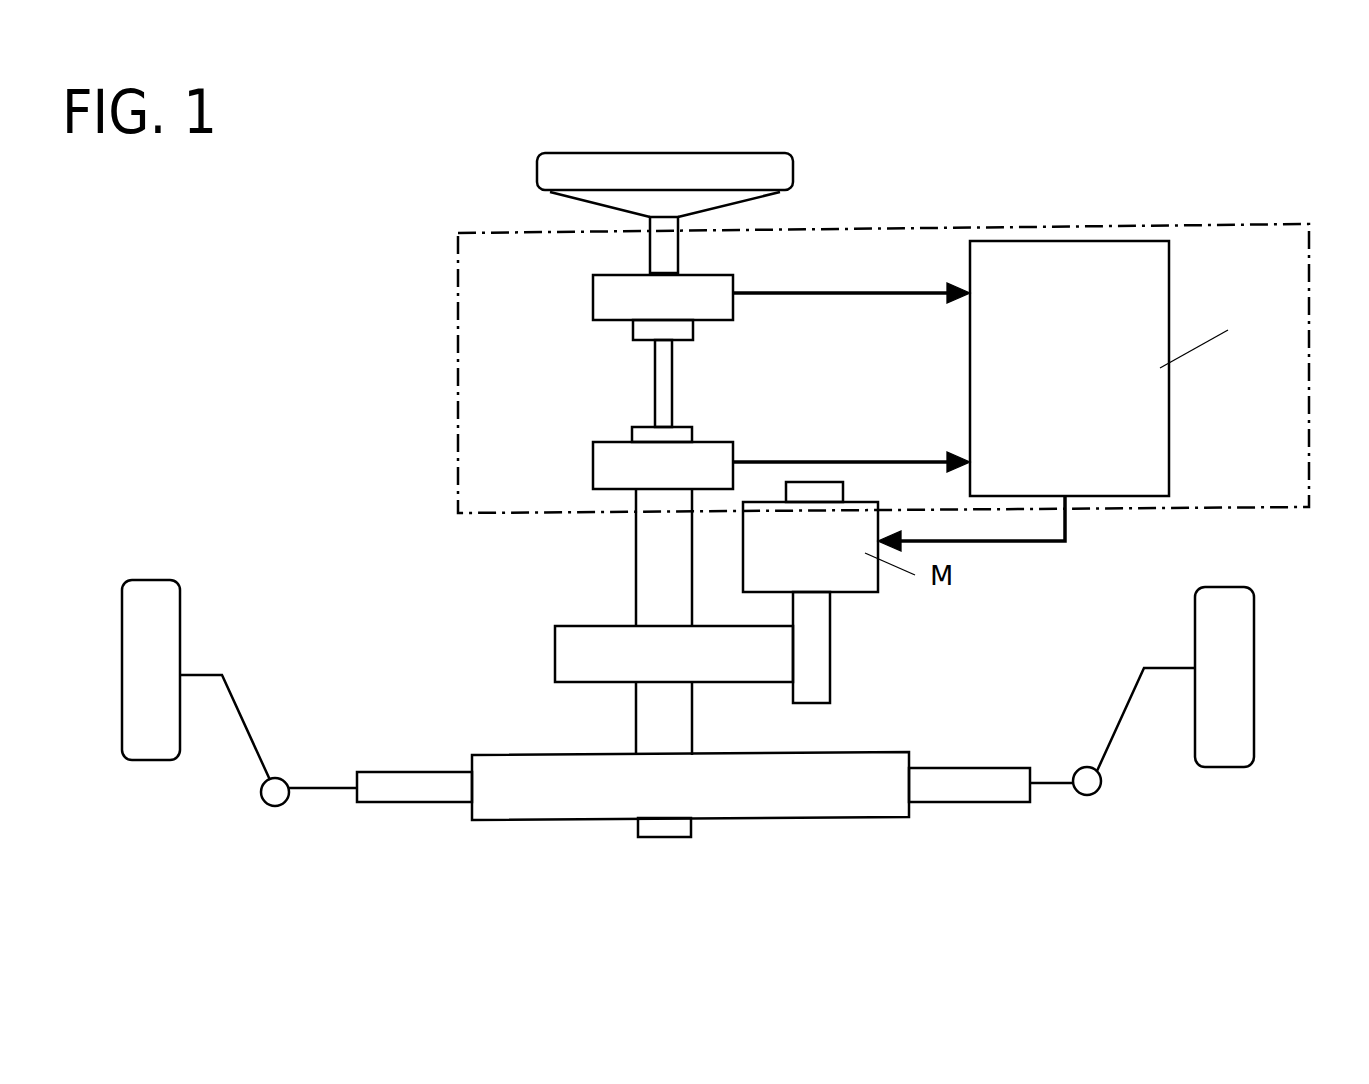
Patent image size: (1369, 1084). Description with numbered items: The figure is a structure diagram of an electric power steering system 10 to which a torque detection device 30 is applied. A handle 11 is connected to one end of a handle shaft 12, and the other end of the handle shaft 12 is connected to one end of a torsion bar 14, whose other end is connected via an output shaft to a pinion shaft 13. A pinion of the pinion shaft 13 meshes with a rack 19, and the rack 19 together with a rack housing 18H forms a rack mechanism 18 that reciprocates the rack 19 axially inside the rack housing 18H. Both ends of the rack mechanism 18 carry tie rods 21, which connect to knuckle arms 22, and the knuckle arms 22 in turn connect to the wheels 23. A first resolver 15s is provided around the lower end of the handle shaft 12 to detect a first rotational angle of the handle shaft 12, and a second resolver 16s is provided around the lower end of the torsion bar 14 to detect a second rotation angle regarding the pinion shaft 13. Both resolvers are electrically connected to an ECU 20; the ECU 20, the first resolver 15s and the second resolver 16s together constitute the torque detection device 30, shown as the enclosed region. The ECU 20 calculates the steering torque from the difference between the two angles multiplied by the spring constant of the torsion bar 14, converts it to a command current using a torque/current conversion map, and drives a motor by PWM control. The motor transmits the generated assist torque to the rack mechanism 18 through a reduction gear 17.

The electric power steering system 10 is at (360, 363).
The handle 11 is at (747, 158).
The handle shaft 12 is at (672, 248).
The pinion shaft 13 is at (642, 549).
The torsion bar 14 is at (655, 392).
The first resolver 15s is at (593, 305).
The second resolver 16s is at (593, 473).
The reduction gear 17 is at (555, 650).
The rack mechanism 18 is at (593, 795).
The rack housing 18H is at (817, 817).
The rack 19 is at (963, 782).
The ECU 20 is at (1081, 244).
The tie rods 21 is at (315, 785).
The knuckle arms 22 is at (235, 703).
The wheels 23 is at (167, 625).
The torque detection device 30 is at (1230, 223).